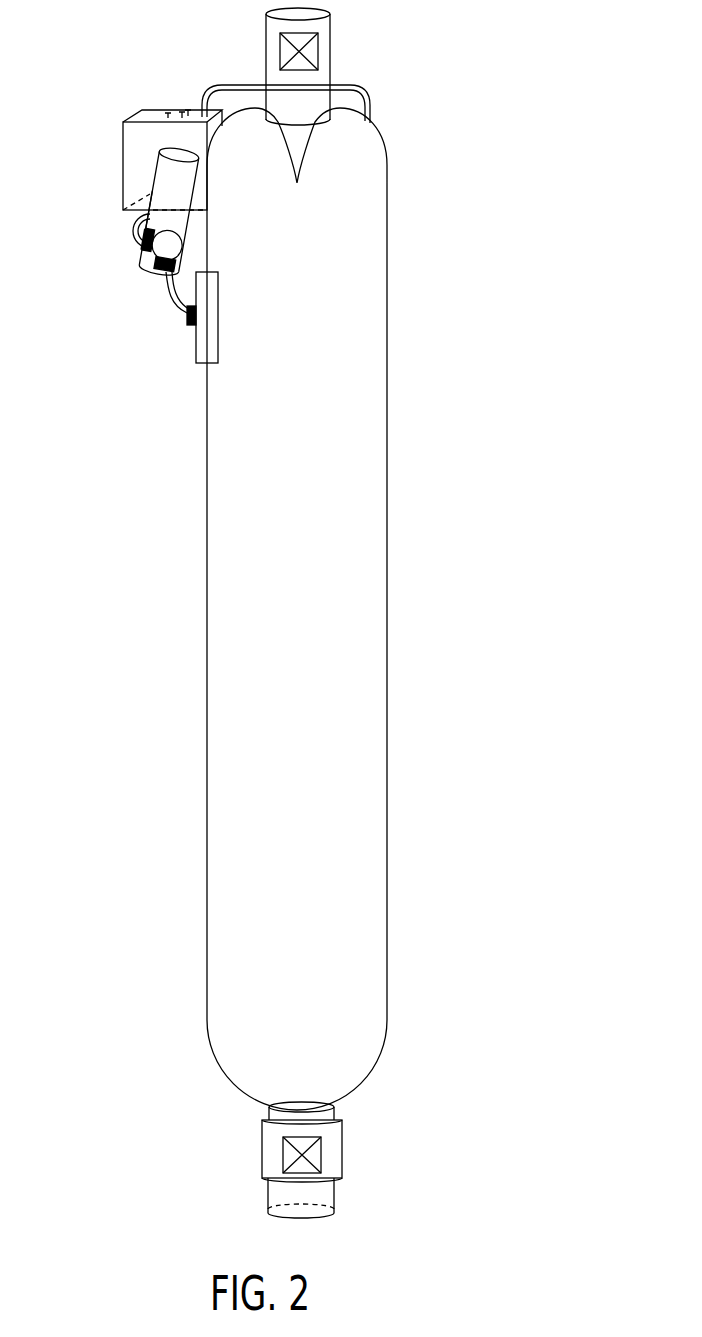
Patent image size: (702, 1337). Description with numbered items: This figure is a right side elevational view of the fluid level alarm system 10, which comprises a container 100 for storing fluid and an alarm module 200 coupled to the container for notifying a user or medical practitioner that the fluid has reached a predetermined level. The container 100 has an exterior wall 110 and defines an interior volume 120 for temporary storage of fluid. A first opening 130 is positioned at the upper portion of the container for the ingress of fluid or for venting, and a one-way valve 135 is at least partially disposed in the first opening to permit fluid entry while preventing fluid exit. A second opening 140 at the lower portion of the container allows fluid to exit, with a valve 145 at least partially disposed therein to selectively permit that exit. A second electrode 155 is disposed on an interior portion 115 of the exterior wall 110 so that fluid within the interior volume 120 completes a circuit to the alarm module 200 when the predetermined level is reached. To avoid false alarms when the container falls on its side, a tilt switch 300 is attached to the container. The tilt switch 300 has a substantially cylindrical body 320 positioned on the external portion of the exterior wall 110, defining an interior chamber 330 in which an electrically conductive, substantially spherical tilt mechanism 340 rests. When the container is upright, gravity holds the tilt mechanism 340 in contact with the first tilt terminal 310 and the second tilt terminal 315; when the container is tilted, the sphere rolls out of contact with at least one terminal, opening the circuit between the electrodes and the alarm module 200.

The fluid level alarm system 10 is at (77, 82).
The container 100 is at (373, 224).
The exterior wall 110 is at (207, 383).
The interior portion of the exterior wall 115 is at (207, 437).
The interior volume 120 is at (302, 394).
The first opening 130 is at (330, 14).
The one-way valve 135 is at (318, 60).
The second opening 140 is at (270, 1218).
The valve 145 is at (322, 1150).
The second electrode 155 is at (207, 336).
The alarm module 200 is at (137, 130).
The tilt switch 300 is at (133, 222).
The first tilt terminal 310 is at (146, 250).
The second tilt terminal 315 is at (153, 270).
The substantially cylindrical body 320 is at (150, 176).
The interior chamber 330 is at (188, 176).
The substantially spherical tilt mechanism 340 is at (170, 245).